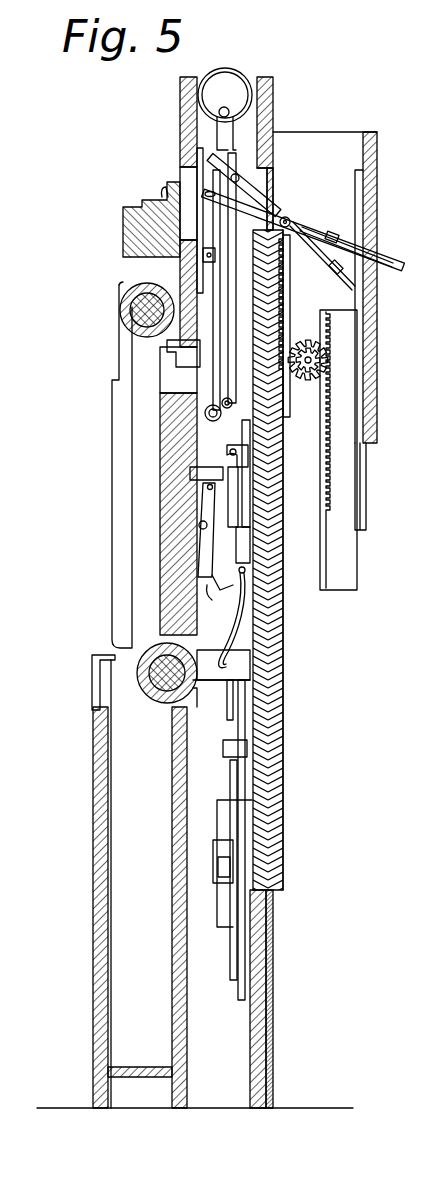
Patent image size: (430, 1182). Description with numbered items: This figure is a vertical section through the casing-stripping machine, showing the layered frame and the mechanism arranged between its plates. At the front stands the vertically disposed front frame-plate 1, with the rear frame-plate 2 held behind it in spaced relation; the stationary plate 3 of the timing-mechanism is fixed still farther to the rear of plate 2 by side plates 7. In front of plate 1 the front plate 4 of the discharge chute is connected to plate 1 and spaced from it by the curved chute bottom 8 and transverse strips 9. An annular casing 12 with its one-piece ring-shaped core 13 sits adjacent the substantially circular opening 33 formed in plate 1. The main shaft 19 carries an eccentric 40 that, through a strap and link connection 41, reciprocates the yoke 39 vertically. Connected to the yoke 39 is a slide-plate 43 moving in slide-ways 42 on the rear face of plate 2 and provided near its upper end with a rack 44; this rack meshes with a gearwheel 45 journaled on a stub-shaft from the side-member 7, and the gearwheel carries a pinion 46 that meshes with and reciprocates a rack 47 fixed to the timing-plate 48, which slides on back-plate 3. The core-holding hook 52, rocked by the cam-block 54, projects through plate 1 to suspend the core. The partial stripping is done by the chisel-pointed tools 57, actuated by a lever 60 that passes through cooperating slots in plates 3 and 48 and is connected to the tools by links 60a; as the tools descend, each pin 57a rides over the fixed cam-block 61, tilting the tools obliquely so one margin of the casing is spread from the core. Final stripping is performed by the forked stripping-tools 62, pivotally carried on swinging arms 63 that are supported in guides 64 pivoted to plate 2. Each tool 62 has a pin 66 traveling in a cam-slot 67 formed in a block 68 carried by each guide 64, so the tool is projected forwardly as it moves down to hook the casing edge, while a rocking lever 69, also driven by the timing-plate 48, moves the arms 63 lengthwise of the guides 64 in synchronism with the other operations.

The front frame-plate 1 is at (172, 800).
The rear frame-plate 2 is at (266, 1022).
The stationary plate of the timing-mechanism 3 is at (374, 406).
The front plate of the chute 4 is at (96, 1015).
The side plates 7 is at (313, 140).
The curved chute bottom 8 is at (144, 1077).
The transverse strips 9 is at (92, 680).
The annular casing 12 is at (124, 343).
The ring-shaped core 13 is at (144, 305).
The main shaft 19 is at (218, 113).
The circular opening 33 is at (178, 380).
The yoke 39 is at (290, 222).
The eccentric 40 is at (233, 85).
The strap and link connection 41 is at (233, 153).
The slide-ways 42 is at (276, 972).
The slide-plate 43 is at (272, 733).
The rack 44 is at (288, 296).
The gearwheel 45 is at (323, 343).
The pinion 46 is at (322, 360).
The rack 47 is at (323, 450).
The timing-plate 48 is at (363, 487).
The hook 52 is at (168, 362).
The cam-block 54 is at (206, 180).
The chisel-pointed tools 57 is at (183, 607).
The pin 57a is at (200, 536).
The lever 60 is at (262, 213).
The links 60a is at (213, 262).
The fixed cam-block 61 is at (194, 556).
The stripping-tools 62 is at (210, 588).
The swinging arms 63 is at (240, 455).
The guides 64 is at (246, 516).
The pin 66 is at (245, 571).
The cam-slot 67 is at (234, 638).
The block 68 is at (242, 661).
The rocking lever 69 is at (258, 192).